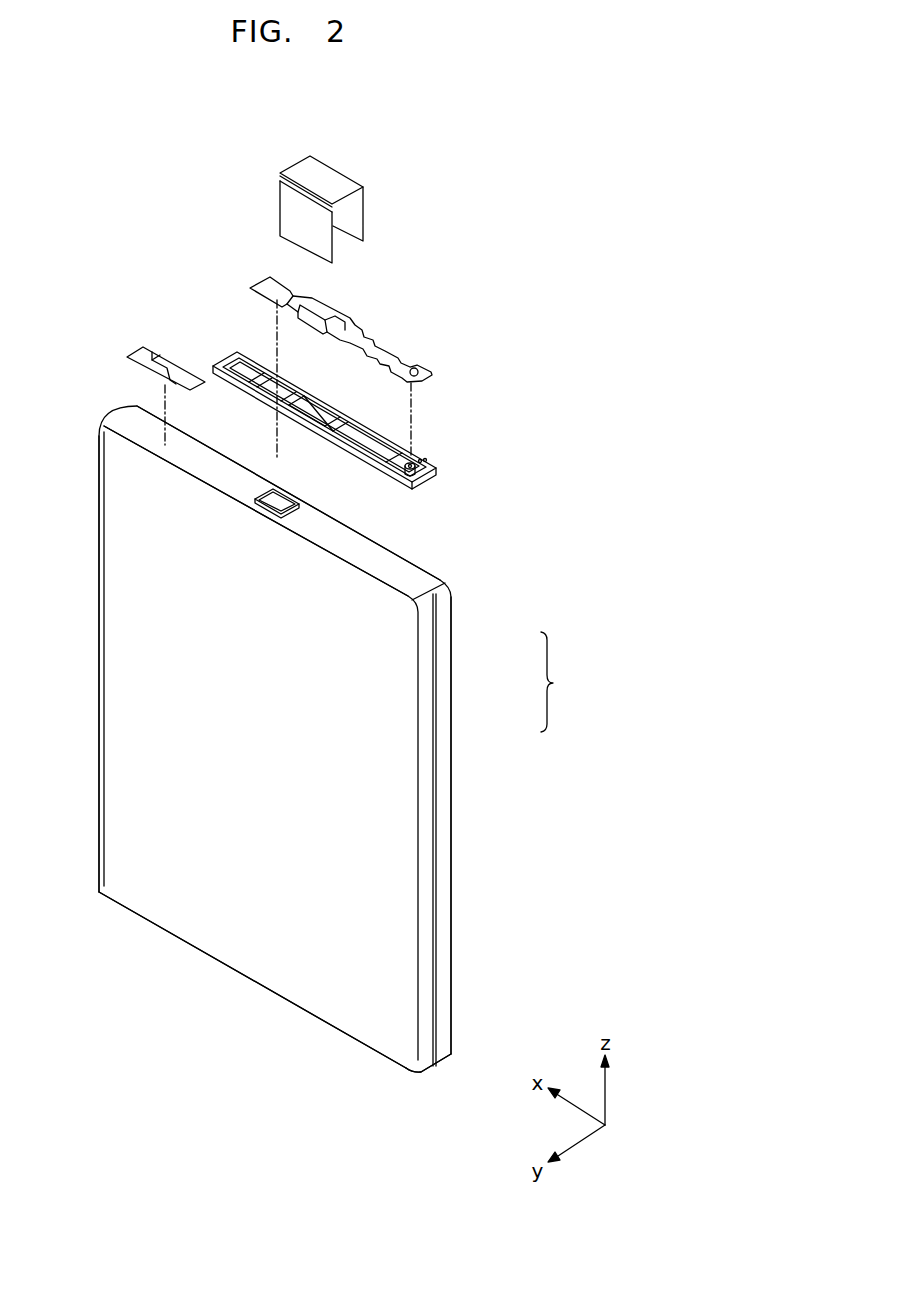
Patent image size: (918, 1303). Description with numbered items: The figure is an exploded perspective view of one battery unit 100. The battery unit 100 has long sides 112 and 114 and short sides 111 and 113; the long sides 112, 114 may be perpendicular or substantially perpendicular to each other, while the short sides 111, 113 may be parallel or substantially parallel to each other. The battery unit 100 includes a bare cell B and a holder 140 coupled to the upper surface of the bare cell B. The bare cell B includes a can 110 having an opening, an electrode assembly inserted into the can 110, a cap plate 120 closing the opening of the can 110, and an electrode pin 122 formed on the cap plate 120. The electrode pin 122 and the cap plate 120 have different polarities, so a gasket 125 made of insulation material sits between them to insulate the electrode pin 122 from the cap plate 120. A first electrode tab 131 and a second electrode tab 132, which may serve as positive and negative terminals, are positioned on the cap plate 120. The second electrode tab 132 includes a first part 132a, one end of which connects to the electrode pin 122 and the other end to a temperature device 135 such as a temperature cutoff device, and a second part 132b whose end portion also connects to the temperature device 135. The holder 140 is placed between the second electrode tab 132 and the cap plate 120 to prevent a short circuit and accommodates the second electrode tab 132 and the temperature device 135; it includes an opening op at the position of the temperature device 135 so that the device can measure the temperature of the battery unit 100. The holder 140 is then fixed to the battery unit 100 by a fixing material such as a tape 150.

The battery unit 100 is at (524, 203).
The can 110 is at (441, 768).
The short side 111 is at (440, 1071).
The long side 112 is at (260, 983).
The short side 113 is at (100, 893).
The long side 114 is at (453, 1010).
The cap plate 120 is at (437, 588).
The electrode pin 122 is at (260, 505).
The gasket 125 is at (287, 515).
The first electrode tab 131 is at (143, 352).
The second electrode tab 132 is at (358, 262).
The first part 132a is at (283, 289).
The second part 132b is at (380, 337).
The temperature device 135 is at (318, 322).
The holder 140 is at (436, 471).
The tape 150 is at (335, 173).
The opening op is at (323, 418).
The bare cell B is at (556, 682).